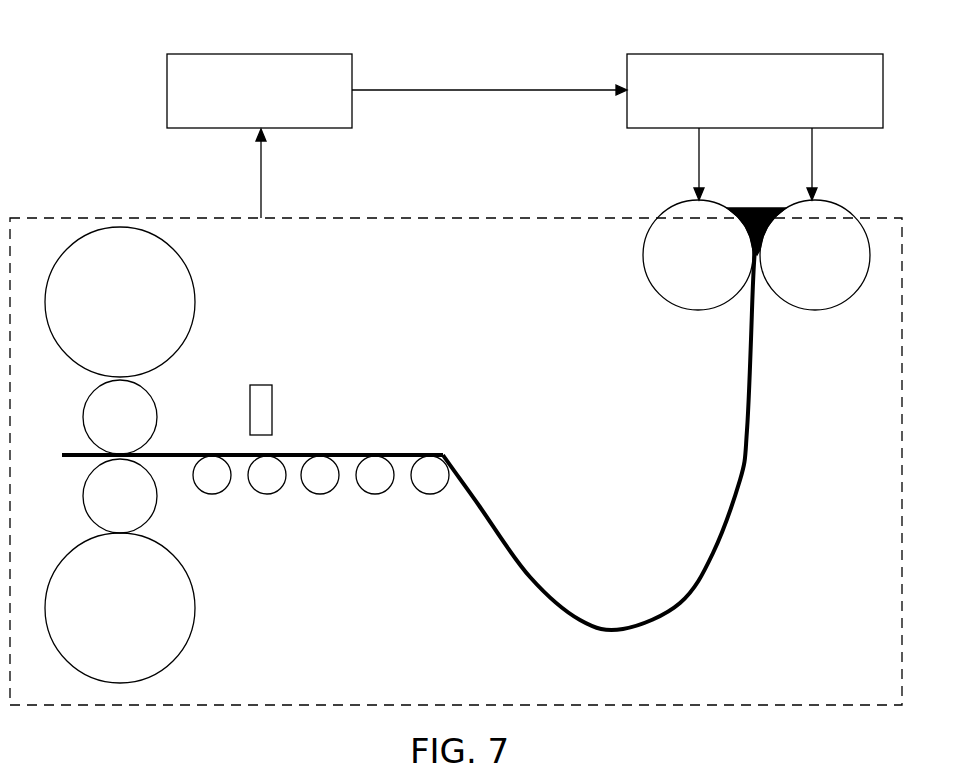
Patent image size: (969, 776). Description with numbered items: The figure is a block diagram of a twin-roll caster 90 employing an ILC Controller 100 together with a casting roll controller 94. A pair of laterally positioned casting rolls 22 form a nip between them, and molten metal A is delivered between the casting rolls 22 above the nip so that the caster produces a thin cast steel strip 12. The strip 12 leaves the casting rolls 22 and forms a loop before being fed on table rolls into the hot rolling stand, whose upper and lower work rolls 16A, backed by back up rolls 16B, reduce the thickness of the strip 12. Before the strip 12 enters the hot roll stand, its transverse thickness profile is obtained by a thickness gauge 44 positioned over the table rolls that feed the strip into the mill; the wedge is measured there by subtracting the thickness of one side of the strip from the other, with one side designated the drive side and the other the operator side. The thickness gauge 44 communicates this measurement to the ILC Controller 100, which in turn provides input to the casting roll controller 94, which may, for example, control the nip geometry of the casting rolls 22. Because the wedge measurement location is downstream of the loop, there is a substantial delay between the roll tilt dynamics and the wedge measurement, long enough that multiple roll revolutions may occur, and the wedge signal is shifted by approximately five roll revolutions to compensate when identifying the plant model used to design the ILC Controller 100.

The ILC Controller 100 is at (232, 53).
The casting roll controller 94 is at (728, 53).
The casting system 90 is at (468, 217).
The casting rolls 22 is at (672, 205).
The molten pool A is at (755, 252).
The thin cast steel strip 12 is at (745, 460).
The upper rolling mill rolls 16B is at (185, 343).
The upper and lower work rolls 16A is at (155, 509).
The thickness gauge 44 is at (272, 385).